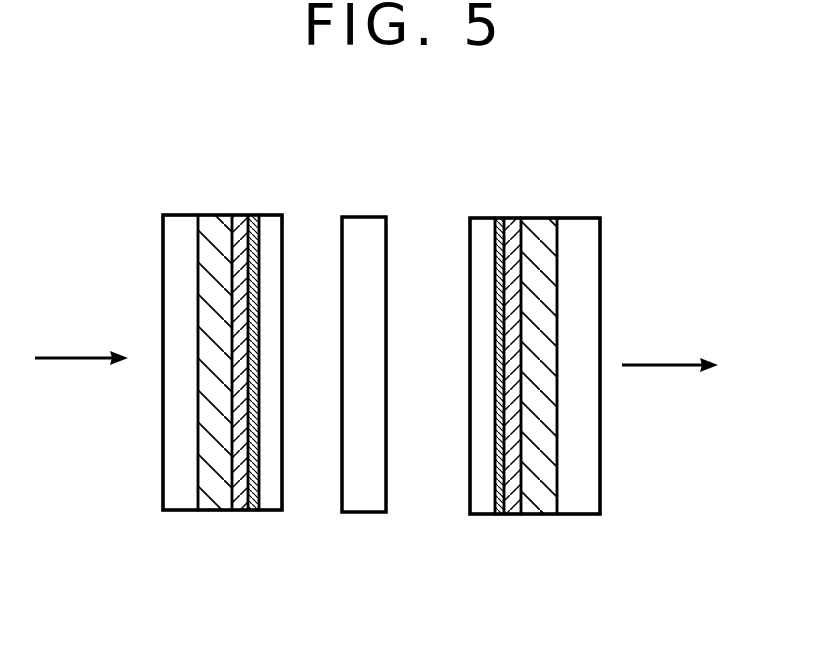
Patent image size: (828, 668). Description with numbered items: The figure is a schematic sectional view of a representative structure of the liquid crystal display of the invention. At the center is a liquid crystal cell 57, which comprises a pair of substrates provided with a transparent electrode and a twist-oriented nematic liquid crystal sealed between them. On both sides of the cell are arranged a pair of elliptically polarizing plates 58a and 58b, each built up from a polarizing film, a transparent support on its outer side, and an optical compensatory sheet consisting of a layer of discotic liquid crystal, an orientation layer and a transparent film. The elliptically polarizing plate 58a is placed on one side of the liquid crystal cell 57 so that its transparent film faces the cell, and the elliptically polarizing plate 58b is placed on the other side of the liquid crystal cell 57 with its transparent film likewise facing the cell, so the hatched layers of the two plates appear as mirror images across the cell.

The elliptically polarizing plate 58a is at (242, 195).
The elliptically polarizing plate 58b is at (532, 195).
The liquid crystal cell 57 is at (368, 228).